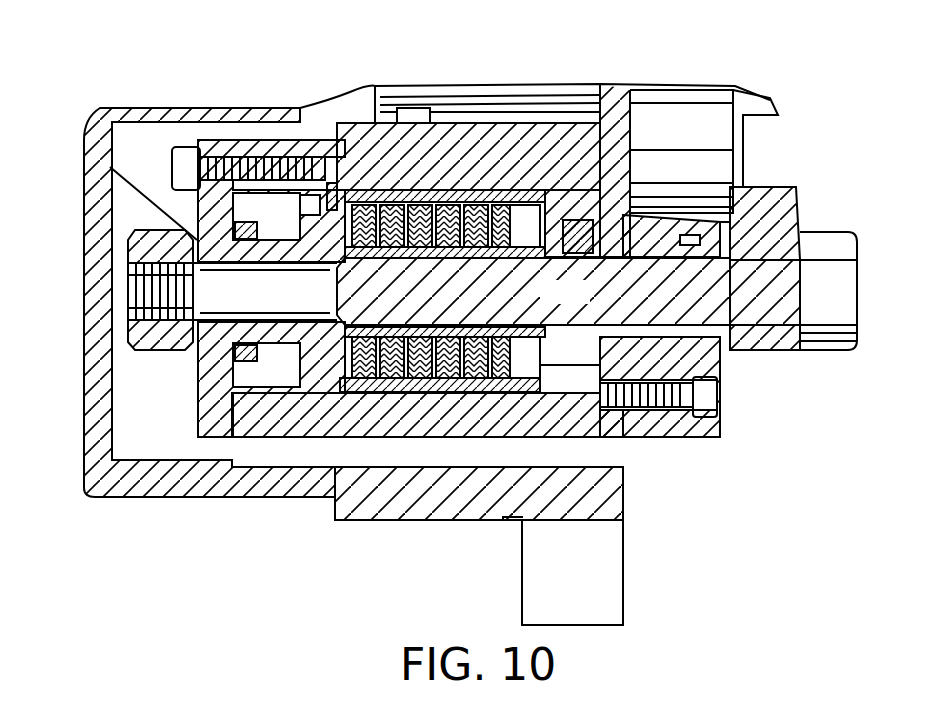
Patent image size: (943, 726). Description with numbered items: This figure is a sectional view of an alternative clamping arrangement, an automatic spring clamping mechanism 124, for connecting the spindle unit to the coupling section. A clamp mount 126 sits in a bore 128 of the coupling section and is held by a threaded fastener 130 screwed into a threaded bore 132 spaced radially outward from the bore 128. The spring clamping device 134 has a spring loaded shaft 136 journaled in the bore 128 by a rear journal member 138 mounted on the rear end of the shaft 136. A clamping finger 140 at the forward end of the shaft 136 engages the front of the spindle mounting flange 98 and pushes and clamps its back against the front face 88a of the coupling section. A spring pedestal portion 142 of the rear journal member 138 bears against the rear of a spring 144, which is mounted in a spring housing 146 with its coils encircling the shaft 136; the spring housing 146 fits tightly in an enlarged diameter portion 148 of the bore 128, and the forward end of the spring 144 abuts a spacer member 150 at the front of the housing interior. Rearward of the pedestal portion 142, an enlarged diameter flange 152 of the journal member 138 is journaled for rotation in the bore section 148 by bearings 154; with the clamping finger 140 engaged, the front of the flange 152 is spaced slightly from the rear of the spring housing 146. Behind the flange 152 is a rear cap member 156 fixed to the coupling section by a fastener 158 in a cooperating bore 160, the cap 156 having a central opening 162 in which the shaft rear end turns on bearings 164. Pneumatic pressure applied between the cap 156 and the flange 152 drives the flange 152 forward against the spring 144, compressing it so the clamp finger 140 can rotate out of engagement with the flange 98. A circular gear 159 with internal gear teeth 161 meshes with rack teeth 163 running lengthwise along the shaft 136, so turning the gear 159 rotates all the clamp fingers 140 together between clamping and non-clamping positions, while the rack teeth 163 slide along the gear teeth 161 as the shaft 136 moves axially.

The forward face 88a is at (627, 482).
The annular mounting flange 98 is at (743, 137).
The automatic spring clamping mechanism 124 is at (807, 112).
The clamp mount 126 is at (720, 357).
The bore 128 is at (640, 430).
The threaded fastener 130 is at (720, 405).
The threaded bore 132 is at (628, 440).
The spring clamping device 134 is at (528, 218).
The spring loaded shaft 136 is at (800, 352).
The rear journal member 138 is at (222, 140).
The clamping finger 140 is at (783, 240).
The spring pedestal portion 142 is at (308, 395).
The spring 144 is at (375, 140).
The spring housing 146 is at (440, 190).
The enlarged diameter portion 148 is at (480, 190).
The lower bearing 150 is at (517, 365).
The enlarged diameter flange 152 is at (287, 393).
The bearings 154 is at (312, 193).
The rear cap member 156 is at (253, 348).
The fastener 158 is at (185, 150).
The circular gear 159 is at (585, 180).
The cooperating bore 160 is at (305, 192).
The internal gear teeth 161 is at (429, 290).
The central opening 162 is at (113, 167).
The rack teeth 163 is at (547, 253).
The bearings 164 is at (262, 338).